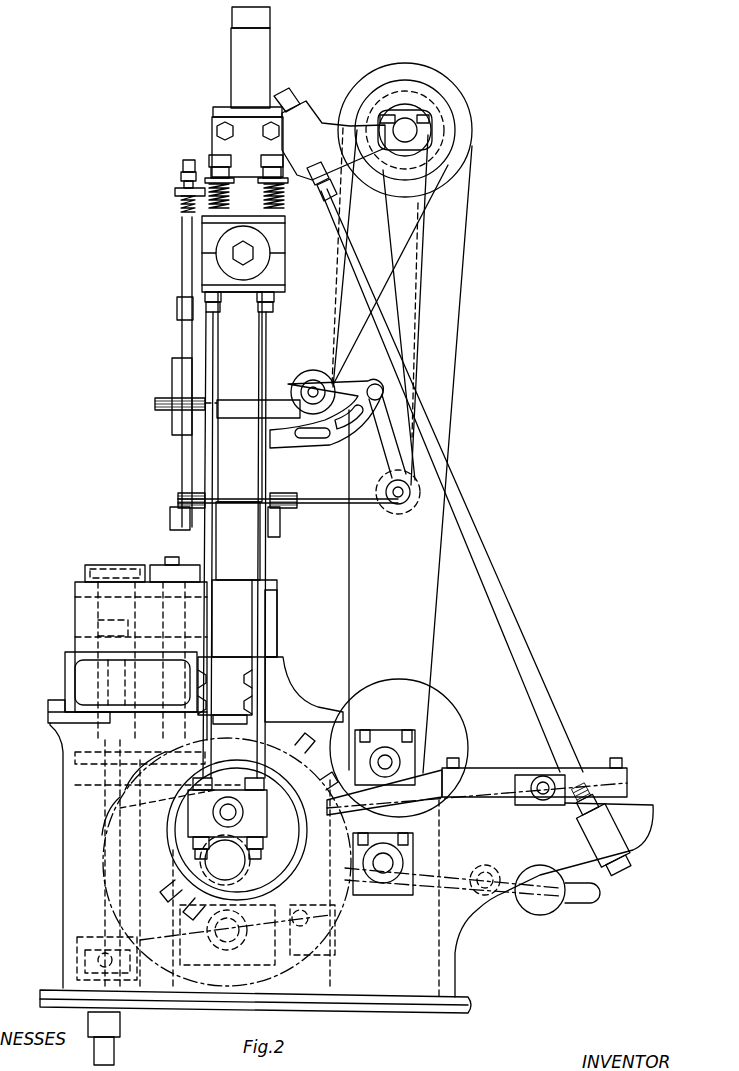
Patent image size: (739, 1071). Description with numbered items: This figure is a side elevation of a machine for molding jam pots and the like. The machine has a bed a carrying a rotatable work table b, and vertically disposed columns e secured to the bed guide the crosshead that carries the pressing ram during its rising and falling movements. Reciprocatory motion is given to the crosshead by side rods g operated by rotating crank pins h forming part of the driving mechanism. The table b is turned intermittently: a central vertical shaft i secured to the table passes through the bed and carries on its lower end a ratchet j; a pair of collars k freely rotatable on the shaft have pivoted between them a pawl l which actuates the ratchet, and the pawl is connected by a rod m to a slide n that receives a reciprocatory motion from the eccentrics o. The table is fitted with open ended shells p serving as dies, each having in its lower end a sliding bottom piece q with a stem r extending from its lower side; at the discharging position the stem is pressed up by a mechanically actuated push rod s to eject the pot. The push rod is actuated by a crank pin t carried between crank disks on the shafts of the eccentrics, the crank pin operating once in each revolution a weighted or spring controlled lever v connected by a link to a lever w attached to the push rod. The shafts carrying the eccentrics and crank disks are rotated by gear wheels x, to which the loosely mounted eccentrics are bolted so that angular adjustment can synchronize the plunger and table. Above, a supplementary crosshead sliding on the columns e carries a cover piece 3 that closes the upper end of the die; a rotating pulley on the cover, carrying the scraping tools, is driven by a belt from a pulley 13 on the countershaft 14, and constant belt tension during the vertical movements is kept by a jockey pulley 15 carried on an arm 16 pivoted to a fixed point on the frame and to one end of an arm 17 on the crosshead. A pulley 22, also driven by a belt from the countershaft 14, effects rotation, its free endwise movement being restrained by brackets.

The cover piece 3 is at (273, 516).
The pulley 13 is at (452, 130).
The countershaft 14 is at (386, 128).
The jockey pulley 15 is at (400, 508).
The arm 16 is at (390, 455).
The arm on the crosshead 17 is at (343, 396).
The pulley 22 is at (168, 406).
The bed a is at (68, 678).
The work table b is at (100, 615).
The columns e is at (238, 549).
The side rods g is at (200, 552).
The crank pins h is at (250, 815).
The central vertical shaft i is at (175, 684).
The ratchet j is at (150, 783).
The collars k is at (160, 752).
The pawl l is at (120, 808).
The rod m is at (483, 790).
The slide n is at (548, 782).
The eccentrics o is at (178, 838).
The open ended shells p is at (113, 566).
The sliding bottom piece q is at (150, 637).
The stem r is at (115, 700).
The push rod s is at (103, 866).
The crank pin t is at (212, 822).
The weighted or spring controlled lever v is at (472, 874).
The lever w is at (218, 948).
The gear wheels x is at (322, 935).